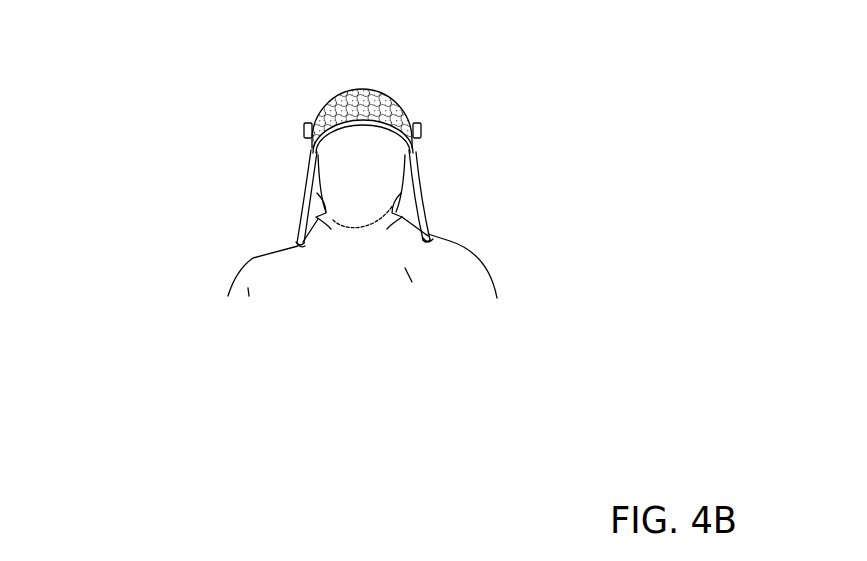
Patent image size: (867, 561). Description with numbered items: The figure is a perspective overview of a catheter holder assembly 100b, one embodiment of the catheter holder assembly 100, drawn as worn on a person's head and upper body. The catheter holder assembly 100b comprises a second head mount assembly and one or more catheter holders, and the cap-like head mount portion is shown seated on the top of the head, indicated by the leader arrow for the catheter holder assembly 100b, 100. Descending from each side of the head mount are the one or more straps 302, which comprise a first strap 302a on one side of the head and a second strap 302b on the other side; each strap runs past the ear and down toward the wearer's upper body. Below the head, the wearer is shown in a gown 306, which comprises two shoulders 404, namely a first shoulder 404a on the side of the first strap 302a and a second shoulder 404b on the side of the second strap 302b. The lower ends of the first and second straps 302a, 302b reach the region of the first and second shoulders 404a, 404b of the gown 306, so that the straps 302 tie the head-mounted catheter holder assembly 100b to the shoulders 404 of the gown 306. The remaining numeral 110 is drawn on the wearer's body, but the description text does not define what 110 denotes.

The catheter holder assembly 100b is at (406, 102).
The catheter holder assembly 100 is at (433, 280).
The first strap 302a is at (308, 212).
The second strap 302b is at (415, 206).
The one or more straps 302 is at (345, 175).
The first shoulder 404a is at (281, 245).
The second shoulder 404b is at (453, 237).
The two shoulders 404 is at (376, 201).
The user 110 is at (487, 269).
The gown 306 is at (410, 278).